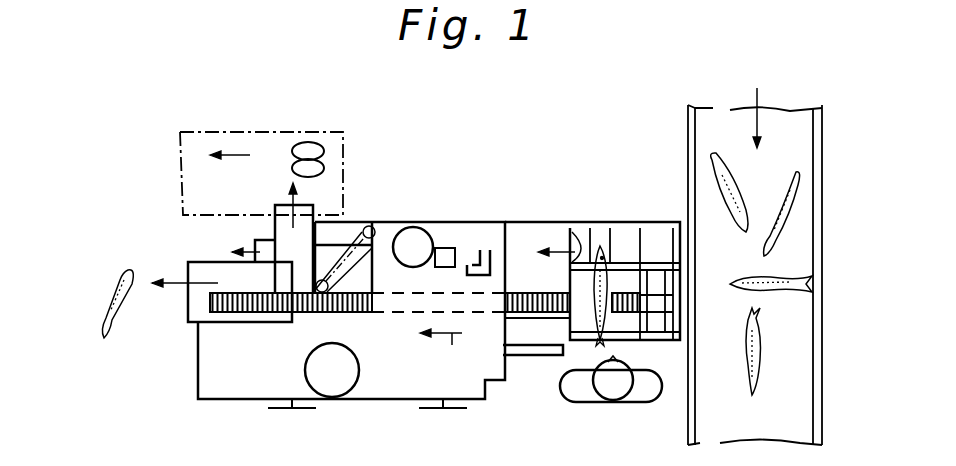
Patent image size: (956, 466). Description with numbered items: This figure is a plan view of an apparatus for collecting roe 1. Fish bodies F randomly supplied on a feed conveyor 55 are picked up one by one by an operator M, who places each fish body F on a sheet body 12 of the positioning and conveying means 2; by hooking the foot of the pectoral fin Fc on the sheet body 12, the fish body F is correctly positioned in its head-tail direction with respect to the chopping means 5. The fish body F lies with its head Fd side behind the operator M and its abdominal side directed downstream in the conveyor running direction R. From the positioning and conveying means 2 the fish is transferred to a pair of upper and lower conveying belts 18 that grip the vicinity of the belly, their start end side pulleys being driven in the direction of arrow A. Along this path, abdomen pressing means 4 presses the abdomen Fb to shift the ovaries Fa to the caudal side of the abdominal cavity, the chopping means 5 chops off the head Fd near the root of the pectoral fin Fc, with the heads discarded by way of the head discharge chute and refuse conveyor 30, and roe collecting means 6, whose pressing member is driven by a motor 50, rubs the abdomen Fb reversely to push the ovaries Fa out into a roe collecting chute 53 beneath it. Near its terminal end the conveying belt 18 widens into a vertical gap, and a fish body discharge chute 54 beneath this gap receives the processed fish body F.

The apparatus for collecting roe 1 is at (662, 104).
The positioning and conveying means 2 is at (619, 222).
The abdomen pressing means 4 is at (492, 240).
The chopping means 5 is at (463, 249).
The roe collecting means 6 is at (360, 265).
The sheet body 12 is at (650, 283).
The conveying belt 18 is at (238, 305).
The head discharge chute and refuse conveyor 30 is at (253, 246).
The motor 50 is at (335, 372).
The roe collecting chute 53 is at (305, 212).
The fish body discharge chute 54 is at (216, 278).
The feed conveyor 55 is at (798, 300).
The direction of rotation of start end side pulleys A is at (441, 354).
The fish body F is at (112, 290).
The ovaries Fa is at (293, 145).
The abdomen Fb is at (580, 240).
The pectoral fin Fc is at (627, 285).
The head Fd is at (602, 250).
The operator M is at (615, 404).
The conveyor running direction R is at (562, 260).